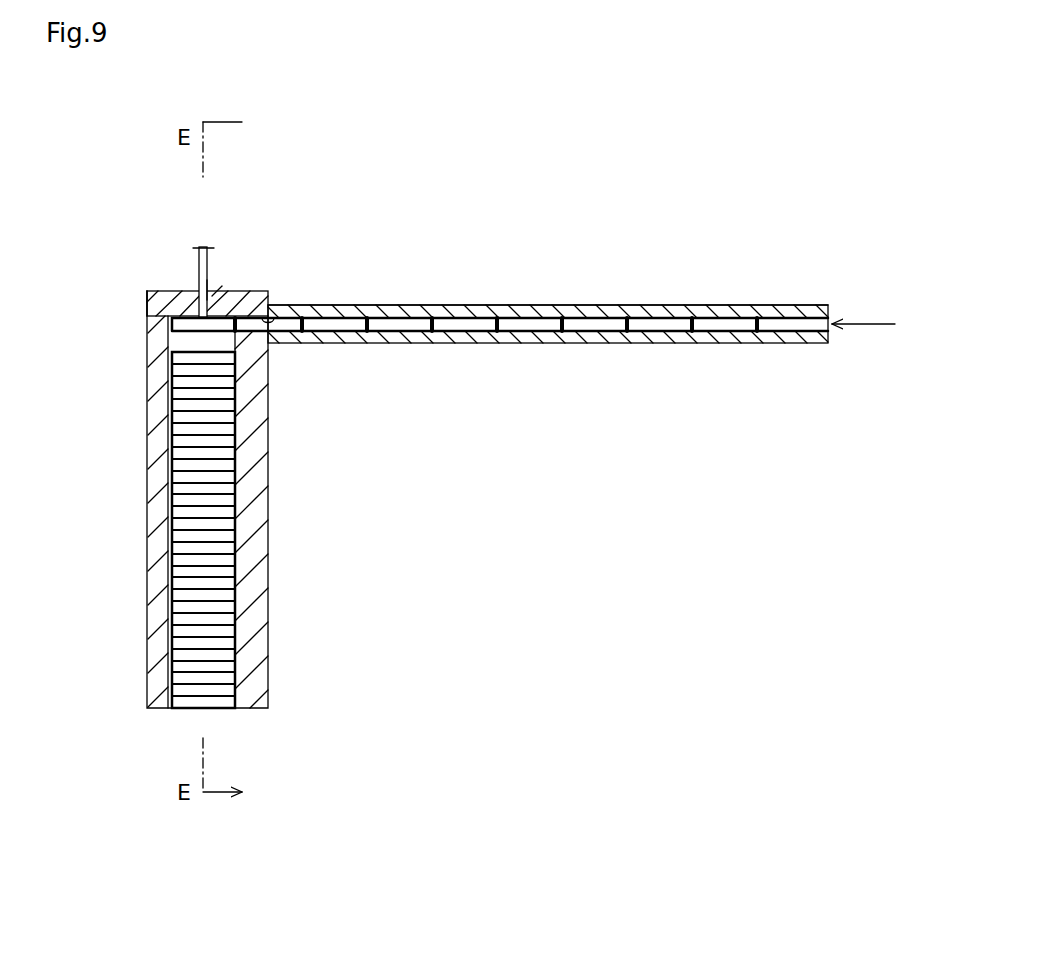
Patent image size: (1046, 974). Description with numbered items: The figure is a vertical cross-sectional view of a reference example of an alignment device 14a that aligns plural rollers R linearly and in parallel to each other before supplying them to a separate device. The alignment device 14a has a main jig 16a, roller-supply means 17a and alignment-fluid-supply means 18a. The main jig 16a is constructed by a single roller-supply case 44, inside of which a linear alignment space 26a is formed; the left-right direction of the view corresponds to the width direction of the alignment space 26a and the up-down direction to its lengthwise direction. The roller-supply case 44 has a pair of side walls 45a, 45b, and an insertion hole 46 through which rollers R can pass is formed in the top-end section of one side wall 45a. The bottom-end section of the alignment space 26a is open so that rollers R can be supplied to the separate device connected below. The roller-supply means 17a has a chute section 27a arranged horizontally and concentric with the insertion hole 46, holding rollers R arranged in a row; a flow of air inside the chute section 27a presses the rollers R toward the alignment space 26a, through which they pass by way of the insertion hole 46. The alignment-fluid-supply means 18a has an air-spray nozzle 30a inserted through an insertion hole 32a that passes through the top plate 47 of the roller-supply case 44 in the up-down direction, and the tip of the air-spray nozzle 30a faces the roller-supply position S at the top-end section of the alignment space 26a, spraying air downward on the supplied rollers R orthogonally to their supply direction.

The alignment device 14a is at (548, 277).
The main jig 16a is at (147, 305).
The roller-supply means 17a is at (622, 310).
The alignment-fluid-supply means 18a is at (212, 247).
The alignment space 26a is at (178, 338).
The chute section 27a is at (532, 313).
The air-spray nozzle 30a is at (207, 290).
The insertion hole 32a is at (212, 297).
The roller-supply case 44 is at (252, 604).
The side wall 45a is at (255, 512).
The side wall 45b is at (157, 498).
The insertion hole 46 is at (268, 322).
The top plate 47 is at (173, 302).
The roller R is at (188, 325).
The roller-supply position S is at (213, 327).